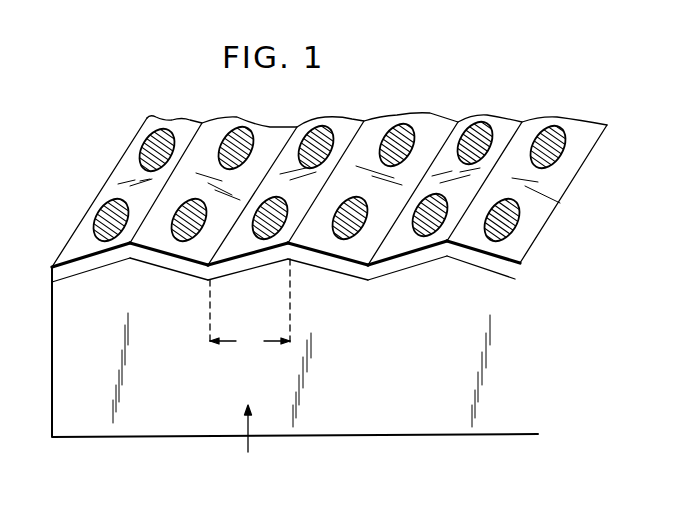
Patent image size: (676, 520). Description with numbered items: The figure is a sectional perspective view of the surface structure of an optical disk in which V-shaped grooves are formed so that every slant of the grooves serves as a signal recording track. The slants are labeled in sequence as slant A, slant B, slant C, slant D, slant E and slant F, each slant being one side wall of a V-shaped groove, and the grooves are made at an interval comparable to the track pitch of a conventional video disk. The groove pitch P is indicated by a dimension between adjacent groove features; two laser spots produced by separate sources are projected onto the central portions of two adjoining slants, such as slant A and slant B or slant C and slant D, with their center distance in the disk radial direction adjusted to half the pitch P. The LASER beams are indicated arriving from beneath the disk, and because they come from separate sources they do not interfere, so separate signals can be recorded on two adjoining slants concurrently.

The slant A is at (93, 265).
The slant B is at (162, 262).
The slant C is at (248, 265).
The slant D is at (327, 262).
The slant E is at (405, 261).
The slant F is at (478, 258).
The groove pitch P is at (250, 306).
The laser LASER is at (249, 441).